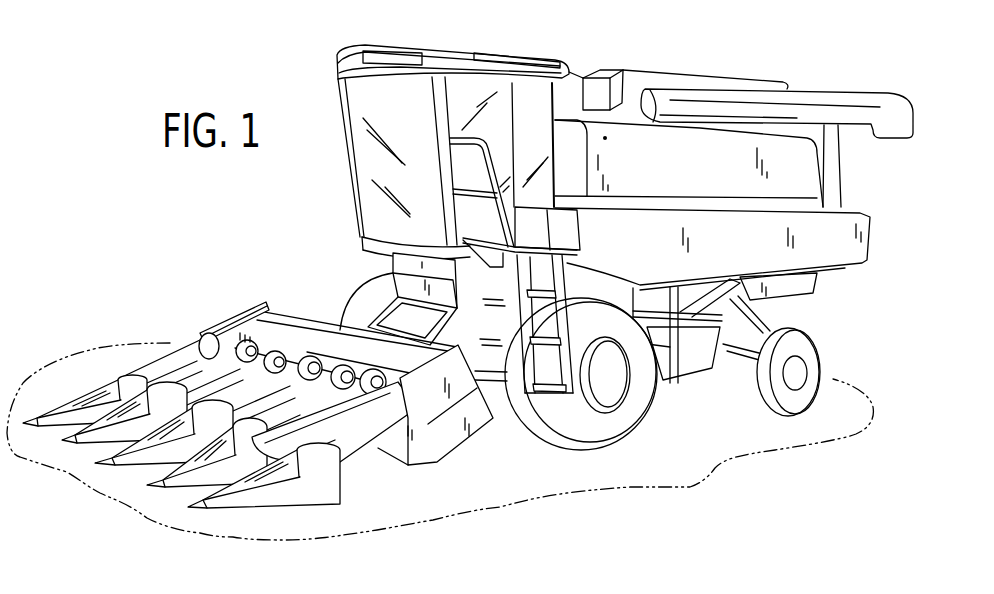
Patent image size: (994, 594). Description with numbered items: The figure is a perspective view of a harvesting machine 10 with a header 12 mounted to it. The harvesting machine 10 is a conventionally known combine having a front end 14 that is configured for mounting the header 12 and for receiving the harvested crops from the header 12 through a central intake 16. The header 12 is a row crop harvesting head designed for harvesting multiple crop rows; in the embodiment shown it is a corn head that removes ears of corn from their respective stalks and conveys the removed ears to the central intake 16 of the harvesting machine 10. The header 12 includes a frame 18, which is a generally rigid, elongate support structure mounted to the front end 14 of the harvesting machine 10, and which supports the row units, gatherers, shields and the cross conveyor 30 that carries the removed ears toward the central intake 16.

The harvesting machine 10 is at (508, 37).
The header 12 is at (254, 300).
The front end 14 is at (346, 268).
The central intake 16 is at (332, 358).
The frame 18 is at (458, 450).
The cross conveyor 30 is at (247, 347).